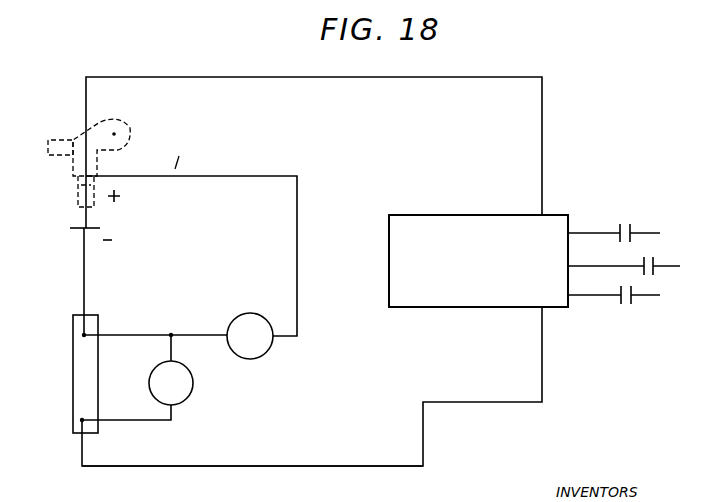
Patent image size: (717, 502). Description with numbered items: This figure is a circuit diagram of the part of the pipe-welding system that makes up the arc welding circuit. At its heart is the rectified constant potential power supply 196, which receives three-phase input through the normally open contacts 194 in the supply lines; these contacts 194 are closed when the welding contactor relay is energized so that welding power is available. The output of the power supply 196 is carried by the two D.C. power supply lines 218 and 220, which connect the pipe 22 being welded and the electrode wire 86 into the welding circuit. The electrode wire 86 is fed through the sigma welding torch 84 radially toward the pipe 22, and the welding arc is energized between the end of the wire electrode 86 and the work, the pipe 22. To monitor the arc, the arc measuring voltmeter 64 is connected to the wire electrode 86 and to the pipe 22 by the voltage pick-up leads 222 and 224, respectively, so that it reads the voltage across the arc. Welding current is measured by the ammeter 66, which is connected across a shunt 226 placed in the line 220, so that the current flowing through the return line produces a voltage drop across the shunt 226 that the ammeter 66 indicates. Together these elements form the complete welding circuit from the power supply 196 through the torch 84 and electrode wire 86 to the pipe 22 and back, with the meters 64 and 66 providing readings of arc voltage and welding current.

The D.C. power supply line 218 is at (222, 77).
The D.C. power supply line 220 is at (190, 467).
The voltage pick-up lead 222 is at (212, 178).
The sigma welding torch 84 is at (72, 178).
The electrode wire 86 is at (84, 205).
The pipe 22 is at (82, 230).
The shunt 226 is at (73, 387).
The voltage pick-up lead 224 is at (148, 335).
The arc measuring voltmeter 64 is at (268, 350).
The ammeter 66 is at (190, 395).
The rectified constant potential power supply 196 is at (509, 198).
The normally open contact 194 is at (632, 232).